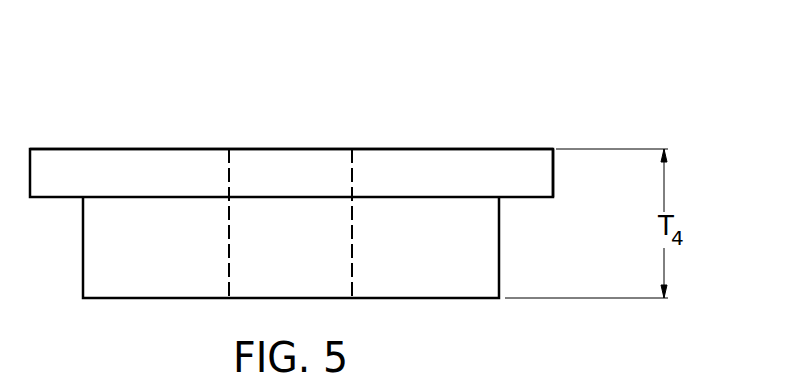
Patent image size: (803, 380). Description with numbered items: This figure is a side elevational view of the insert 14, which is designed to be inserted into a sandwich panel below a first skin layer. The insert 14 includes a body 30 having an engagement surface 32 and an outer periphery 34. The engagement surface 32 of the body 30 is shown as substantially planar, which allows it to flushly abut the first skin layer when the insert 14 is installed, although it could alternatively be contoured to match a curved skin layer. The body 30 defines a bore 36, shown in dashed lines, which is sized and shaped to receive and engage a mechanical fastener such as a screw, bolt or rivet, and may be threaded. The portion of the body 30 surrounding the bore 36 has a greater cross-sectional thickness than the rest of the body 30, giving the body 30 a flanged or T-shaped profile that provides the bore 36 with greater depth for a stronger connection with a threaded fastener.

The insert 14 is at (570, 117).
The body 30 is at (419, 157).
The engagement surface 32 is at (96, 149).
The outer periphery 34 is at (553, 174).
The bore 36 is at (228, 258).